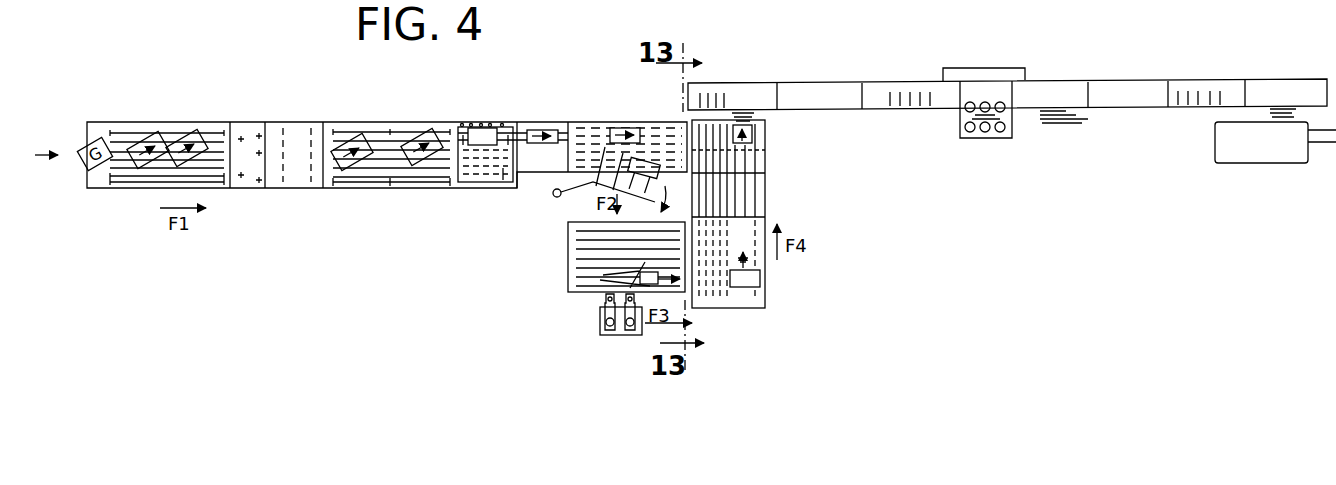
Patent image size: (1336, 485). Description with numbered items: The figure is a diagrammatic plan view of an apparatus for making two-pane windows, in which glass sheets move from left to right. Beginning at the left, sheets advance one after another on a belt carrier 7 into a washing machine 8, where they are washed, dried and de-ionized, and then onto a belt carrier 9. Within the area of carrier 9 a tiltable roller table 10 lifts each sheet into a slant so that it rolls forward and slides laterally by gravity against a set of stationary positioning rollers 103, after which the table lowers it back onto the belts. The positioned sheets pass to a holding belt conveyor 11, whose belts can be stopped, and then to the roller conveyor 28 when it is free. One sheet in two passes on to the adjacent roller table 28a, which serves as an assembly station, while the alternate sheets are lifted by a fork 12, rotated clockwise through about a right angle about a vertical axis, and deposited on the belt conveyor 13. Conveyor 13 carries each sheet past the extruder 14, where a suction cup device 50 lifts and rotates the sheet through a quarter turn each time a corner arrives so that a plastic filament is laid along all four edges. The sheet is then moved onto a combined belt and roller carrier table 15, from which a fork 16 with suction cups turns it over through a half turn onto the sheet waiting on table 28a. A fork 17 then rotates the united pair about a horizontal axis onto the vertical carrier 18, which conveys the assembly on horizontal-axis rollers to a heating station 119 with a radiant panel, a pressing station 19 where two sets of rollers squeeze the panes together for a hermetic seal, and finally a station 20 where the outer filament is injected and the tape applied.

The belt carrier 7 is at (174, 121).
The washing machine 8 is at (279, 121).
The belt carrier 9 is at (360, 121).
The tiltable roller table 10 is at (484, 184).
The stationary positioning rollers 103 is at (490, 124).
The holding belt conveyor 11 is at (542, 120).
The roller conveyor 28 is at (653, 119).
The roller table 28a is at (768, 157).
The fork 12 is at (586, 192).
The belt conveyor 13 is at (566, 262).
The suction cup device 50 is at (615, 283).
The extruder 14 is at (597, 331).
The fork 16 is at (767, 201).
The combined belt and roller carrier table 15 is at (768, 285).
The fork 17 is at (745, 121).
The vertical carrier 18 is at (726, 81).
The heating station 119 is at (906, 80).
The pressing station 19 is at (987, 102).
The injection station 20 is at (1289, 104).